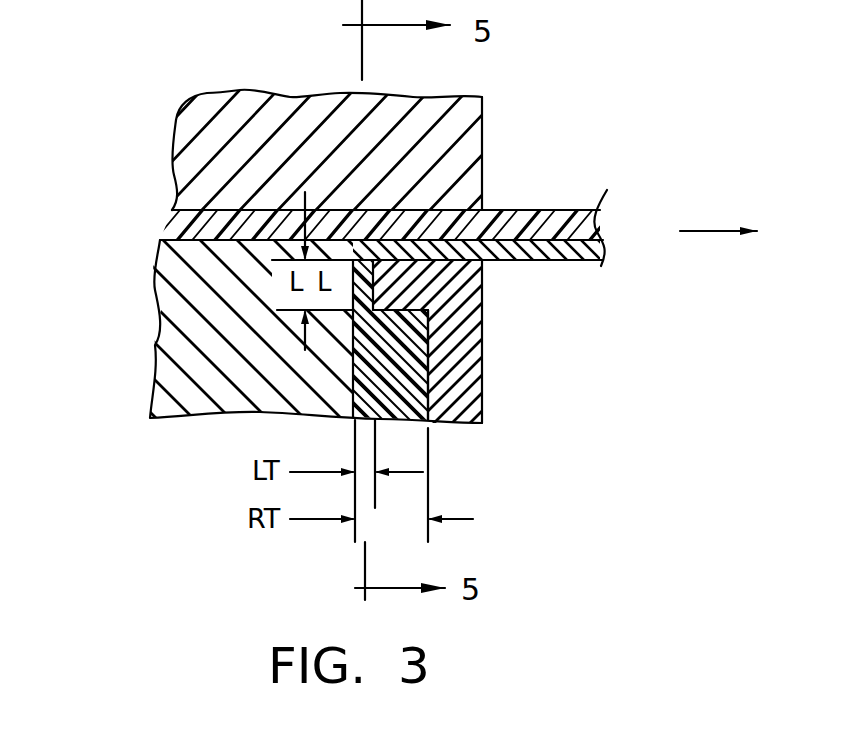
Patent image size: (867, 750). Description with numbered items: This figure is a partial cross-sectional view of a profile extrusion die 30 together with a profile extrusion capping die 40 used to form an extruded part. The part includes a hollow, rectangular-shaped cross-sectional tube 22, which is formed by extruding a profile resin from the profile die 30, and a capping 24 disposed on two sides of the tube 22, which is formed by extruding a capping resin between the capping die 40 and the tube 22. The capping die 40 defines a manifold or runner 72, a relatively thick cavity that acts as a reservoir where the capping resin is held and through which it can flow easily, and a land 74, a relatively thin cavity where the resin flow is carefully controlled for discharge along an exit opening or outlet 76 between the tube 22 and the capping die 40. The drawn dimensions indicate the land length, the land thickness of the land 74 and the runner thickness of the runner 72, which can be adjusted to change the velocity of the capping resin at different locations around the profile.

The profile extrusion die 30 is at (176, 304).
The tube 22 is at (577, 218).
The capping 24 is at (580, 252).
The exit opening or outlet 76 is at (505, 238).
The manifold or runner 72 is at (398, 358).
The land 74 is at (382, 277).
The profile extrusion capping die 40 is at (462, 402).